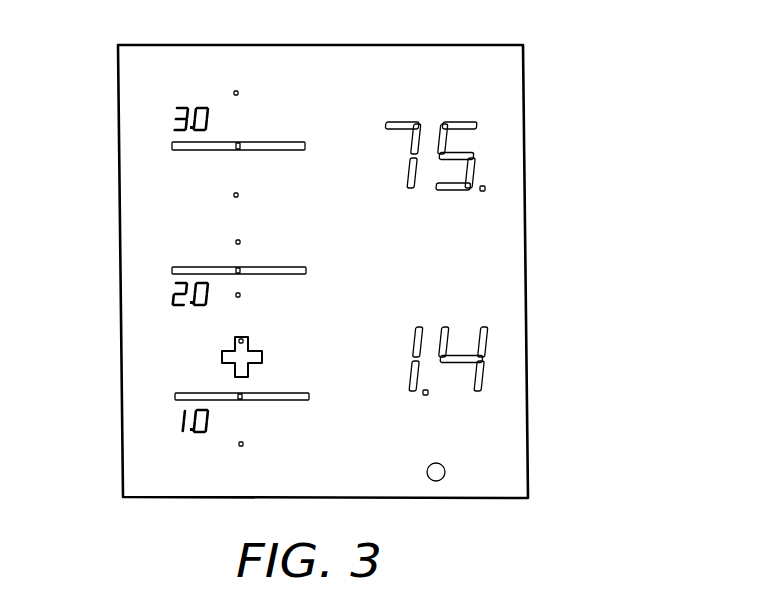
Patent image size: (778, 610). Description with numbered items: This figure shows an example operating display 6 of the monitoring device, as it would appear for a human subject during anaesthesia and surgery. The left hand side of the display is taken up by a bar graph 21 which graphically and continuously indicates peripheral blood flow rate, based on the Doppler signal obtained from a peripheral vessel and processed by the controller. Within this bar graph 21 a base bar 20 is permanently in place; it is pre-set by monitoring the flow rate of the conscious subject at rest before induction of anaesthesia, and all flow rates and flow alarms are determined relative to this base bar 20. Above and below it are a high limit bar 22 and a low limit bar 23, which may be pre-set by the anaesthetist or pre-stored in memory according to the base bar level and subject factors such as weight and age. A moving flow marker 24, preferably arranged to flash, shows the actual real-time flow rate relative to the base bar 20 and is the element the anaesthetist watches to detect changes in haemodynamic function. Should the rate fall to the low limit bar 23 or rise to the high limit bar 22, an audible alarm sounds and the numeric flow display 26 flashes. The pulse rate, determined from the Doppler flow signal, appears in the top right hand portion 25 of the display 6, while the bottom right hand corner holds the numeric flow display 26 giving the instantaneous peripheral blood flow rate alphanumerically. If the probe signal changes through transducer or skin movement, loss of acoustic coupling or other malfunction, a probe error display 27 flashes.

The display 6 is at (579, 165).
The base bar 20 is at (180, 266).
The bar graph 21 is at (157, 449).
The high limit bar 22 is at (176, 148).
The low limit bar 23 is at (182, 393).
The moving flow marker 24 is at (222, 356).
The top right hand portion of the display 25 is at (477, 138).
The numeric flow display 26 is at (497, 368).
The probe error display 27 is at (475, 465).